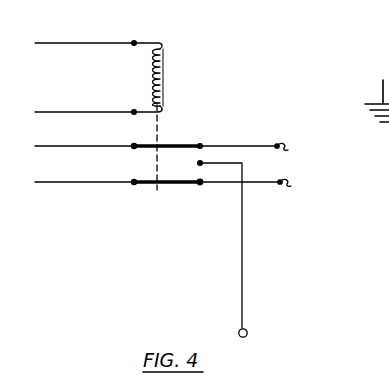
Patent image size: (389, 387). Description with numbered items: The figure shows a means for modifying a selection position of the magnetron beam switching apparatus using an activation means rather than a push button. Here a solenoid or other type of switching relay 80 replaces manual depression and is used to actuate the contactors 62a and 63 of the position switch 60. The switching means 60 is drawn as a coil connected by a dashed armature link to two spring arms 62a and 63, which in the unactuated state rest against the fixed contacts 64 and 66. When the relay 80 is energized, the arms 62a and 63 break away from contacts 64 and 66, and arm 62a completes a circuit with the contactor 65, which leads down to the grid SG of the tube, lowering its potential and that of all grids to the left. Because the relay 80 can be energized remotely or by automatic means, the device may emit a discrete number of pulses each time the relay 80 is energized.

The switching relay 80 is at (162, 52).
The switching means 60 is at (192, 87).
The spring arm 62a is at (133, 149).
The spring arm 63 is at (133, 185).
The contact 64 is at (236, 146).
The contactor 65 is at (242, 161).
The contact 66 is at (258, 183).